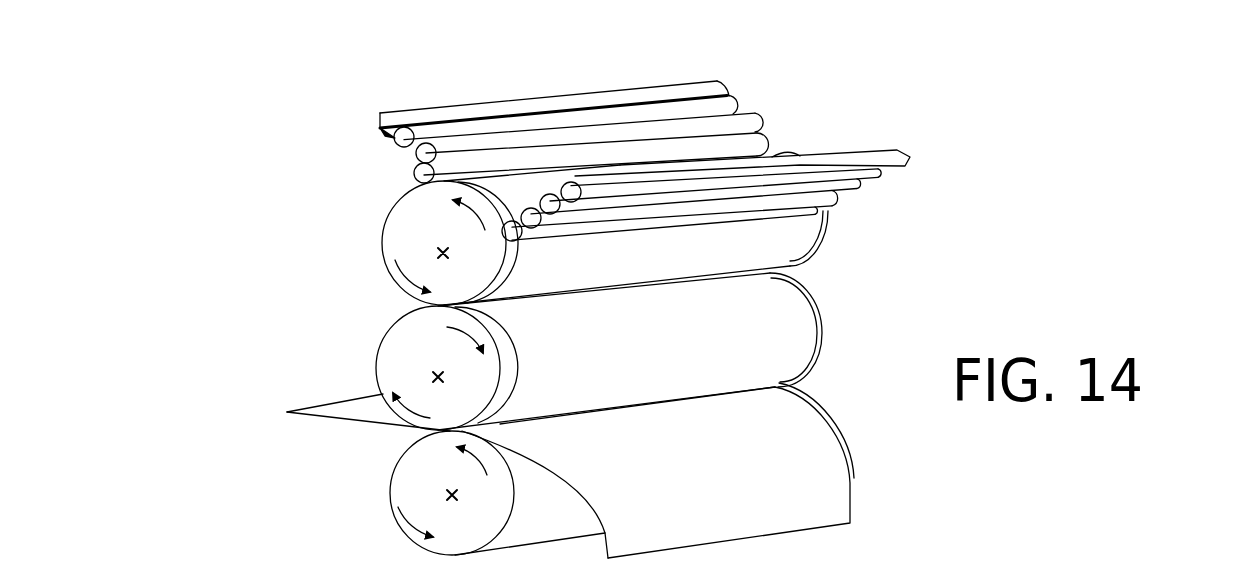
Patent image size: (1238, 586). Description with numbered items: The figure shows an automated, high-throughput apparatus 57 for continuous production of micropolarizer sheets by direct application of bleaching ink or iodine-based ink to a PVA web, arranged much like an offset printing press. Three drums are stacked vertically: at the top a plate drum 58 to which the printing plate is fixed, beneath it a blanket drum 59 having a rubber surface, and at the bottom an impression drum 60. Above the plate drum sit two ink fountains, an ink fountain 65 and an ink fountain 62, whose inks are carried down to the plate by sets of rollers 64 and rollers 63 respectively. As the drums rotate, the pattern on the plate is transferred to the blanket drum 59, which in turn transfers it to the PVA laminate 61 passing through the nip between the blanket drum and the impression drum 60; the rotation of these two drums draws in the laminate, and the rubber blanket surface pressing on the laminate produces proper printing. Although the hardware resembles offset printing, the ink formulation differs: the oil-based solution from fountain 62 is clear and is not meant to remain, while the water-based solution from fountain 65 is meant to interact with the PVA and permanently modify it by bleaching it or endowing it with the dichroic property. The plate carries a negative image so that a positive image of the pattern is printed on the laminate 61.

The apparatus 57 is at (223, 318).
The plate drum 58 is at (438, 234).
The blanket drum 59 is at (441, 364).
The impression drum 60 is at (453, 487).
The PVA laminate 61 is at (813, 480).
The ink fountain 62 is at (917, 157).
The rollers 63 is at (853, 197).
The rollers 64 is at (412, 172).
The ink fountain 65 is at (425, 112).